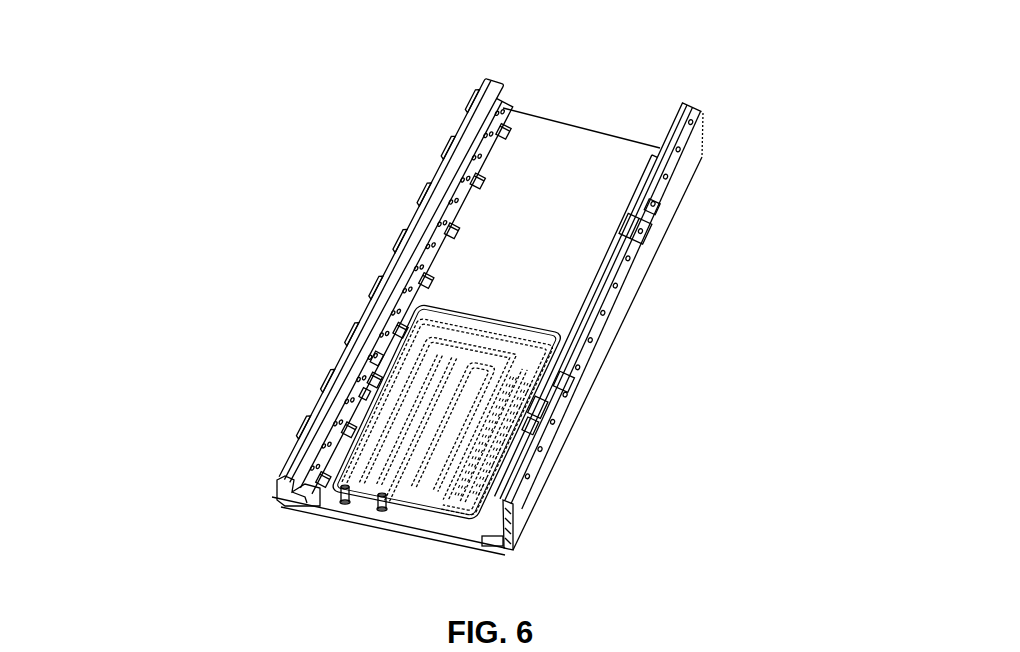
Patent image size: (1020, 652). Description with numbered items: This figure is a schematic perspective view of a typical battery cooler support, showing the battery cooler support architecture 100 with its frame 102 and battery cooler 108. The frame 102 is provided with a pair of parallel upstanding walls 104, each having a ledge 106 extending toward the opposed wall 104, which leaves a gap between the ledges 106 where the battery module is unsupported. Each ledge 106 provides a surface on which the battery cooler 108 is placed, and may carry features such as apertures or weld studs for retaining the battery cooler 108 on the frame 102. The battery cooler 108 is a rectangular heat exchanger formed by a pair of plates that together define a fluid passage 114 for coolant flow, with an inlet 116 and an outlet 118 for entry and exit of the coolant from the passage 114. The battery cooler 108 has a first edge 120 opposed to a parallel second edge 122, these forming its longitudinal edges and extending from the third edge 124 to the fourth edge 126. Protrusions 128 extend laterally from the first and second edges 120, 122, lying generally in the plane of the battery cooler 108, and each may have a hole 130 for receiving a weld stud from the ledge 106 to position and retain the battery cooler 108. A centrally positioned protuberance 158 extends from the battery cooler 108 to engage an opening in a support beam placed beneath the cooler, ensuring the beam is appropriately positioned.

The battery cooler support architecture 100 is at (205, 122).
The frame 102 is at (704, 137).
The upstanding wall 104 is at (498, 102).
The ledge 106 is at (317, 498).
The battery cooler 108 is at (443, 477).
The fluid passage 114 is at (472, 507).
The inlet 116 is at (340, 495).
The outlet 118 is at (378, 508).
The first edge 120 is at (530, 428).
The second edge 122 is at (370, 402).
The third edge 124 is at (530, 330).
The fourth edge 126 is at (427, 513).
The protrusion 128 is at (381, 368).
The hole 130 is at (405, 323).
The protuberance 158 is at (433, 435).